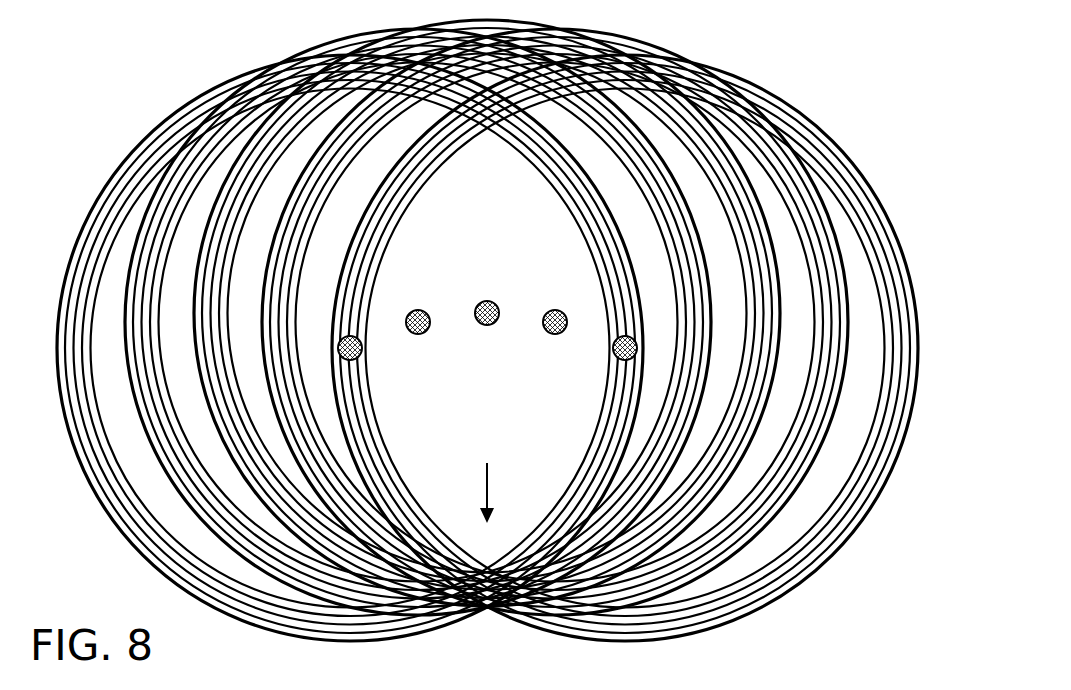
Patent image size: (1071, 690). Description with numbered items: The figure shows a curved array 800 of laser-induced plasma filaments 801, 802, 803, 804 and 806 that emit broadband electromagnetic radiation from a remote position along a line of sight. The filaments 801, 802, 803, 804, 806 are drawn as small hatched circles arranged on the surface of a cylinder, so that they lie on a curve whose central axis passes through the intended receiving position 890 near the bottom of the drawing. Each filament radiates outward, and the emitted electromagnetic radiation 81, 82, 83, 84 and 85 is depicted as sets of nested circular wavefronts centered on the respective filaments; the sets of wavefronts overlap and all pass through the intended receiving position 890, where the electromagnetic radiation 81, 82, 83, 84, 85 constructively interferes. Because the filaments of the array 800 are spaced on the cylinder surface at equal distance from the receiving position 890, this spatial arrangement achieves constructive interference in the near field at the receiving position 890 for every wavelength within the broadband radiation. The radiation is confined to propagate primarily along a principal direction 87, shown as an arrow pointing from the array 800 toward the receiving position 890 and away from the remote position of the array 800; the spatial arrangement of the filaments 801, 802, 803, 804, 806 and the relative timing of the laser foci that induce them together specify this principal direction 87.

The electromagnetic radiation 81 is at (57, 313).
The electromagnetic radiation 82 is at (125, 313).
The electromagnetic radiation 83 is at (194, 313).
The electromagnetic radiation 84 is at (262, 313).
The electromagnetic radiation 85 is at (332, 313).
The curved array 800 is at (487, 310).
The laser-induced plasma filament 801 is at (361, 350).
The laser-induced plasma filament 802 is at (428, 330).
The laser-induced plasma filament 803 is at (484, 325).
The laser-induced plasma filament 804 is at (546, 331).
The sixth transducer element 806 is at (614, 352).
The principal direction 87 is at (486, 499).
The intended receiving position 890 is at (490, 611).